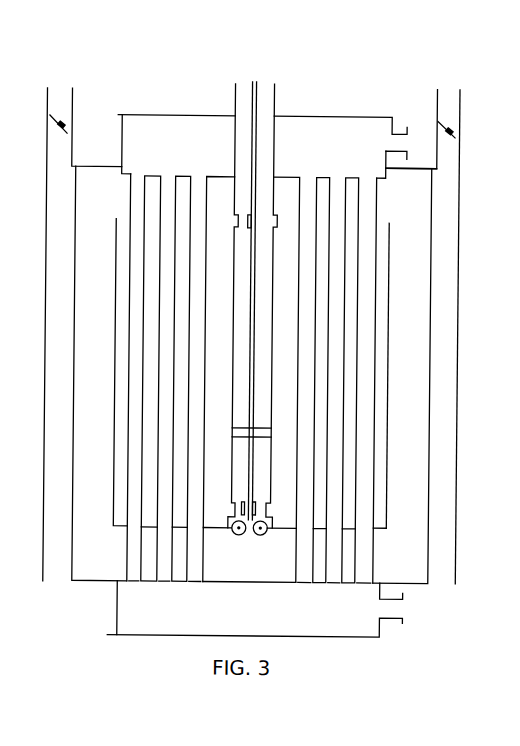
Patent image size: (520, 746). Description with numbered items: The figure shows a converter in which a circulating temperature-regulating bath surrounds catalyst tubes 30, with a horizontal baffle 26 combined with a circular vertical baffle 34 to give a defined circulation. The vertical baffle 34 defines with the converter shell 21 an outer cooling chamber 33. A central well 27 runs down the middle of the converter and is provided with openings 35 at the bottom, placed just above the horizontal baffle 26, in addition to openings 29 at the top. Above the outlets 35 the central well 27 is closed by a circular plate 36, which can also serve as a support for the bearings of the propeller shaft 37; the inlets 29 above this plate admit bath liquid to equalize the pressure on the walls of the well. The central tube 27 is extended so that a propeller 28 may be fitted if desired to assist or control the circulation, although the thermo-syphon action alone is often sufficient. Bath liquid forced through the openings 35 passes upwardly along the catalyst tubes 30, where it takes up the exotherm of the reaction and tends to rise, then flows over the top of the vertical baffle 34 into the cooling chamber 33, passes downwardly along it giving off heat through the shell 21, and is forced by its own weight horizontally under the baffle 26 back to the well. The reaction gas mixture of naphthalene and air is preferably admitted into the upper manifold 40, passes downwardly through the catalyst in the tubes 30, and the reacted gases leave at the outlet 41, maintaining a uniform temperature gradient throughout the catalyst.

The converter shell 21 is at (428, 468).
The horizontal baffle 26 is at (377, 529).
The central well 27 is at (267, 538).
The propeller 28 is at (240, 537).
The openings 29 is at (254, 225).
The catalyst tubes 30 is at (297, 363).
The cooling chamber 33 is at (415, 440).
The vertical baffle 34 is at (388, 505).
The openings 35 is at (238, 500).
The circular plate 36 is at (262, 428).
The propeller shaft 37 is at (250, 345).
The upper manifold 40 is at (350, 116).
The outlet 41 is at (375, 638).